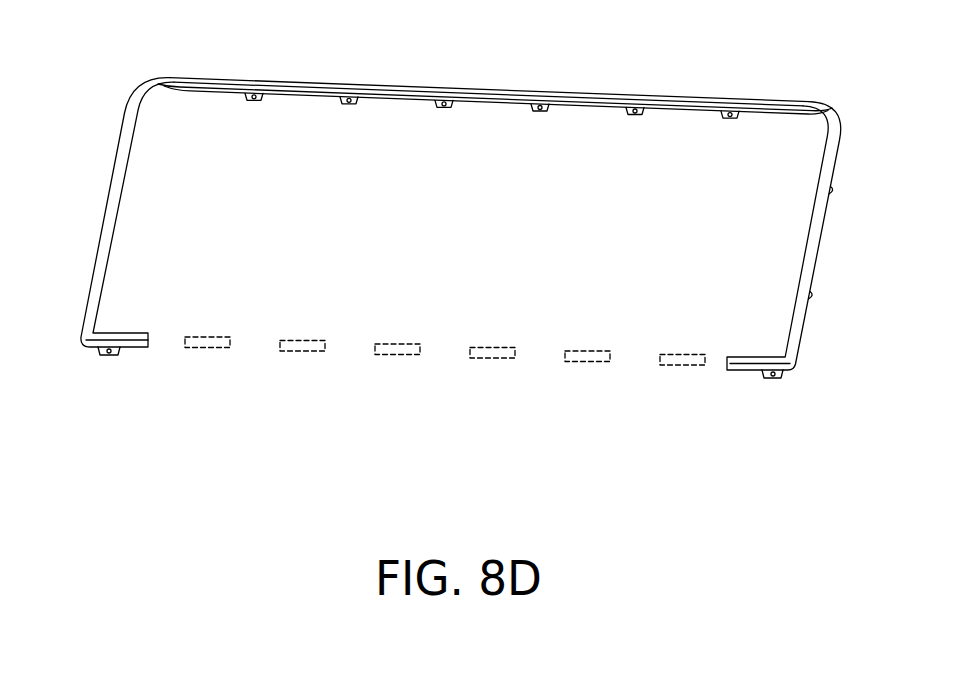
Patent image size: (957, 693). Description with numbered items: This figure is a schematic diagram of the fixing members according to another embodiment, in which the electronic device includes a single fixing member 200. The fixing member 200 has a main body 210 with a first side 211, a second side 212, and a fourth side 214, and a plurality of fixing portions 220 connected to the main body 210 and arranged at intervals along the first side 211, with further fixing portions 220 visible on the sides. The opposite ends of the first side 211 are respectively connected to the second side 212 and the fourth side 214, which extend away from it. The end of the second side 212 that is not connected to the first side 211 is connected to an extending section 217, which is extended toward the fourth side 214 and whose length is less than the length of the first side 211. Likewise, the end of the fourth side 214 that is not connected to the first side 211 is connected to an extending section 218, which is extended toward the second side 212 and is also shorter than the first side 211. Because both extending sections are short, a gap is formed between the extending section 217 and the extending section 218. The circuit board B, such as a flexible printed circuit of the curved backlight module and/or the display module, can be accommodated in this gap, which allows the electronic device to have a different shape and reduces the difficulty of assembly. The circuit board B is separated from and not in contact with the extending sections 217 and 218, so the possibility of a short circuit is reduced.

The fixing member 200 is at (461, 238).
The main body 210 is at (461, 239).
The first side 211 is at (385, 86).
The second side 212 is at (108, 190).
The fourth side 214 is at (819, 245).
The extending section 217 is at (132, 339).
The extending section 218 is at (748, 362).
The fixing portions 220 is at (343, 87).
The circuit board B is at (203, 348).